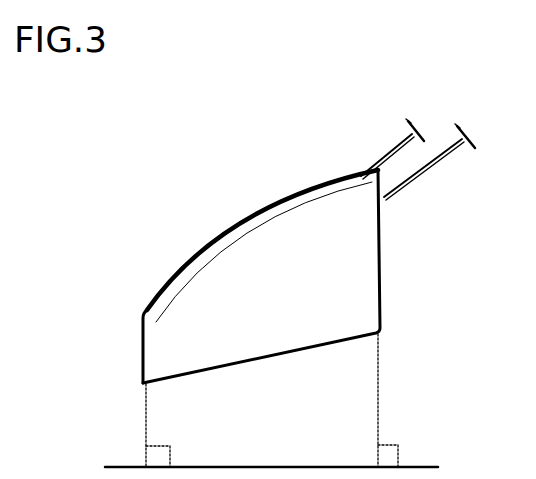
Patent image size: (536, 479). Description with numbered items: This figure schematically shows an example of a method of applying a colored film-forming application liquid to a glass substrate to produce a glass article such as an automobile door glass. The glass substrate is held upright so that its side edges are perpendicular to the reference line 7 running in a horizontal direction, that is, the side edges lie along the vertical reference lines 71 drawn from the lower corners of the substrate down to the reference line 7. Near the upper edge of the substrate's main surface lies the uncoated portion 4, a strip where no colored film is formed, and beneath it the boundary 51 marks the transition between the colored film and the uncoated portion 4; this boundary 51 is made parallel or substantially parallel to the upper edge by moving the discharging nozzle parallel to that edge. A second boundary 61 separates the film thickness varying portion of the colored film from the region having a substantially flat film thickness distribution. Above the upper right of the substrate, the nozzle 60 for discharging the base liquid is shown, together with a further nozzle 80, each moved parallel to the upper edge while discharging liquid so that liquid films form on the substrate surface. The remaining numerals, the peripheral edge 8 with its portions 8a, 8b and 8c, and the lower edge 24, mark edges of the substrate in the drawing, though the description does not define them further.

The uncoated portion 4 is at (236, 230).
The boundary 51 is at (274, 198).
The boundary 61 is at (286, 237).
The first holding pin 80 is at (364, 170).
The nozzle 60 is at (432, 173).
The peripheral edge of glass 8 is at (205, 370).
The front upper edge 8a is at (188, 262).
The rear edge 8b is at (382, 258).
The front edge 8c is at (141, 372).
The lower edge 24 is at (278, 354).
The reference lines 71 is at (262, 400).
The reference line 7 is at (286, 461).